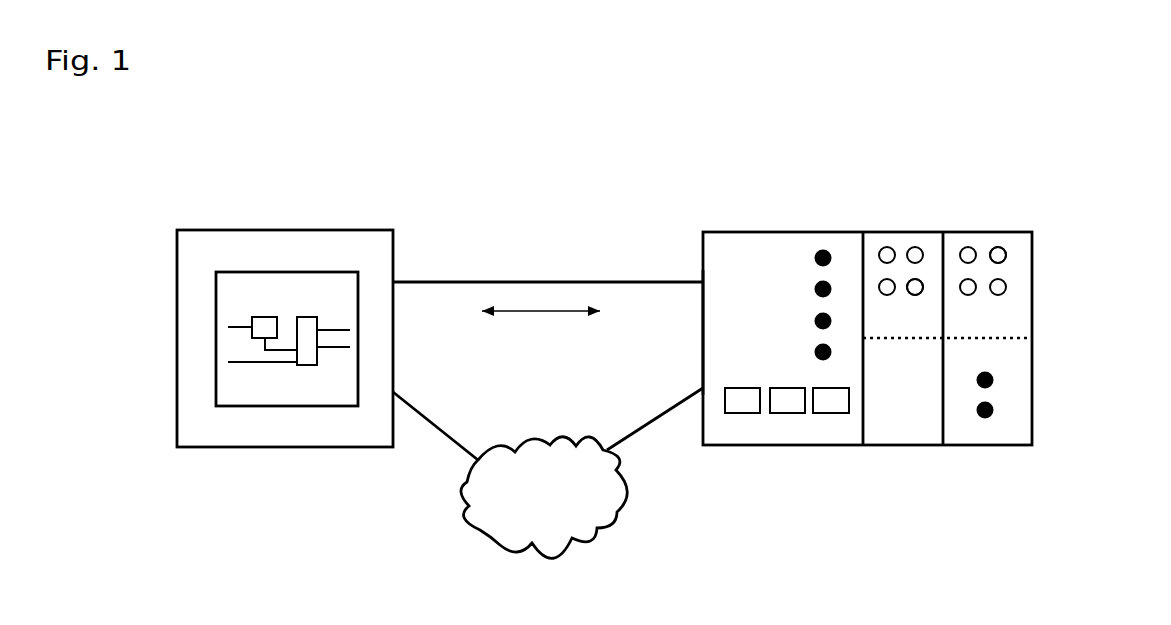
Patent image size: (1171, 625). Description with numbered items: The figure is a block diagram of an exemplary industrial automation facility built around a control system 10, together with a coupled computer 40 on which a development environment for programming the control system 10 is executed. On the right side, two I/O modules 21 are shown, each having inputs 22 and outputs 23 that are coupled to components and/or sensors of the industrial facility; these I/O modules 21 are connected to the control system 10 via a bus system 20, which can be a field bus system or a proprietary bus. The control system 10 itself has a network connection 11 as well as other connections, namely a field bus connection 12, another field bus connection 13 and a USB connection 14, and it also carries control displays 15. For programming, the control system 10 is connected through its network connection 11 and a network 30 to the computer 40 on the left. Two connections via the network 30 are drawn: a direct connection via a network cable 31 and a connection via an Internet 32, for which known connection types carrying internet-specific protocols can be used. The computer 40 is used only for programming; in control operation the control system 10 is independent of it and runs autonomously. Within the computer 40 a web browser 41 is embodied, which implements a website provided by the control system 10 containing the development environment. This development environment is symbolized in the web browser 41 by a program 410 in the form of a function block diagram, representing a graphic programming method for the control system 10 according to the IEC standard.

The control system 10 is at (772, 232).
The network connection 11 is at (702, 387).
The field bus connection 12 is at (740, 413).
The another field bus connection 13 is at (787, 413).
The USB connection 14 is at (827, 413).
The control displays 15 is at (828, 249).
The bus system 20 is at (1033, 338).
The I/O modules 21 is at (962, 232).
The inputs 22 is at (922, 316).
The outputs 23 is at (994, 380).
The network 30 is at (582, 220).
The network cable 31 is at (502, 282).
The Internet 32 is at (617, 517).
The computer 40 is at (267, 230).
The web browser 41 is at (232, 272).
The program 410 is at (284, 377).